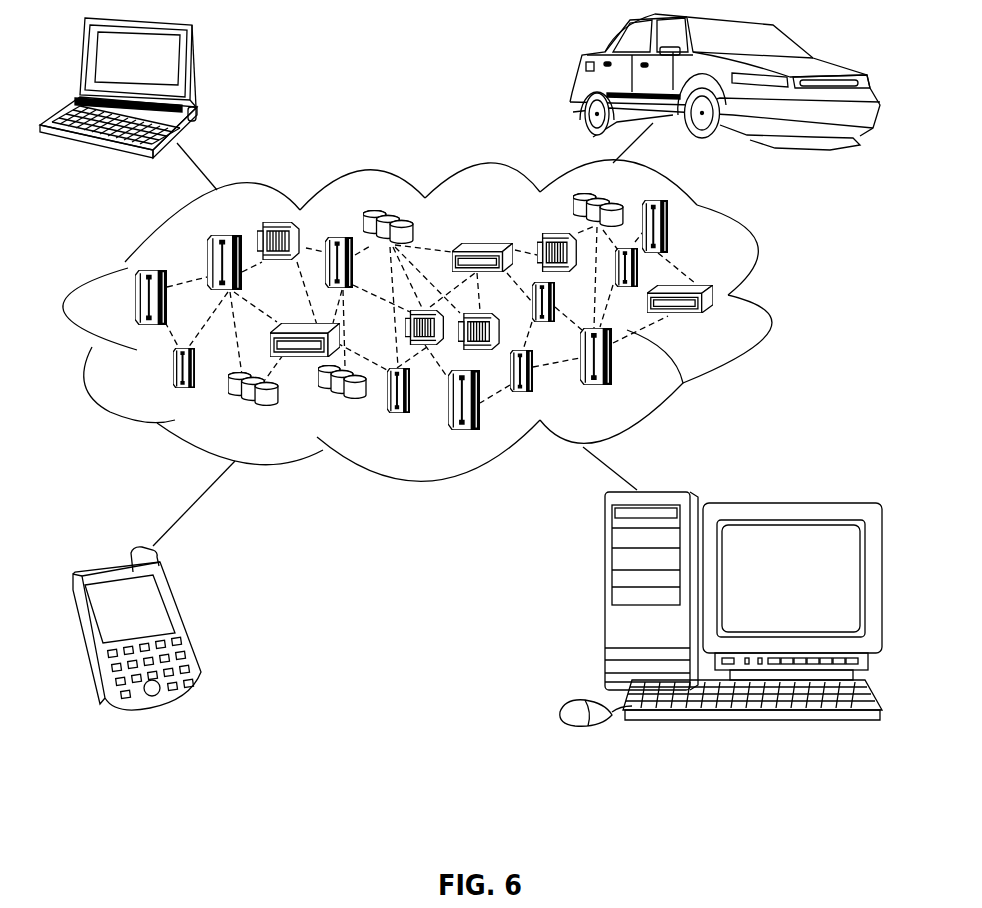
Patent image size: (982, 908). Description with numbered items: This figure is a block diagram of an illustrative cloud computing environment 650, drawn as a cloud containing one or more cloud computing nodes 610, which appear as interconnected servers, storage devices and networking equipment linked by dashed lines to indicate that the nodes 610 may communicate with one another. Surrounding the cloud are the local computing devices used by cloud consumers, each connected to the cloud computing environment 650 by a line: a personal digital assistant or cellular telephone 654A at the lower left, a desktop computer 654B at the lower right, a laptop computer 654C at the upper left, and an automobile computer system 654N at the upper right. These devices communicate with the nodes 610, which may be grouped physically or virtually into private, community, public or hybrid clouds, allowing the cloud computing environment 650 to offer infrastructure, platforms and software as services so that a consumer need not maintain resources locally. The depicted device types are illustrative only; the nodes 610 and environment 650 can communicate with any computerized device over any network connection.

The cloud computing nodes 610 is at (740, 322).
The cloud computing environment 650 is at (758, 262).
The personal digital assistant (PDA) or cellular telephone 654A is at (183, 622).
The desktop computer 654B is at (605, 602).
The laptop computer 654C is at (193, 65).
The automobile computer system 654N is at (580, 70).